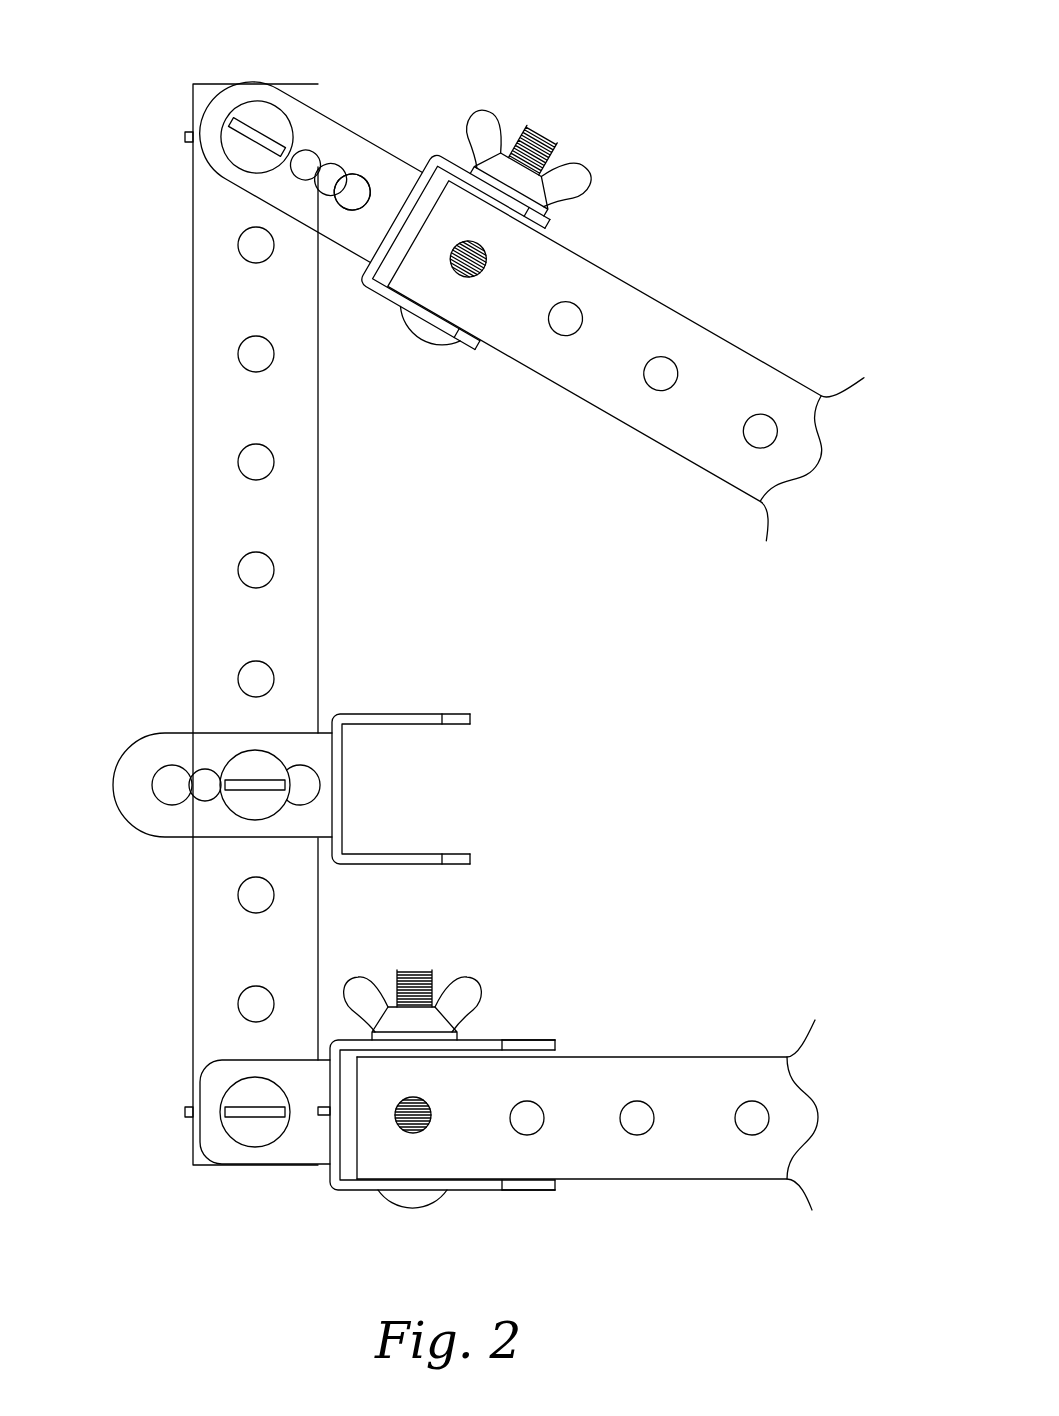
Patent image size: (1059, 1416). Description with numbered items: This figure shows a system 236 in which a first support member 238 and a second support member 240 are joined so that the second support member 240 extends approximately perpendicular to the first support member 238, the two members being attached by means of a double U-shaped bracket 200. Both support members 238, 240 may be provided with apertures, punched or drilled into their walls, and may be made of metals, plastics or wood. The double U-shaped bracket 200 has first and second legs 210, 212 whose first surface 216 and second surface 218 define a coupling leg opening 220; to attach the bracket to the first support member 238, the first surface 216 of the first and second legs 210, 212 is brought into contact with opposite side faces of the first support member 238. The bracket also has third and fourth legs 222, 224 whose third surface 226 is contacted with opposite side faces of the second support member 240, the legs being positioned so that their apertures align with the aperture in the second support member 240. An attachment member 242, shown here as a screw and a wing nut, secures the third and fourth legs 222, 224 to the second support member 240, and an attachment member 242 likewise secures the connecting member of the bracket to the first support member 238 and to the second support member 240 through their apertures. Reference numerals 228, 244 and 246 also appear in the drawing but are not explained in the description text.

The double U-shaped bracket 200 is at (447, 97).
The first leg 210 is at (336, 128).
The second leg 212 is at (556, 1190).
The first surface 216 is at (491, 1058).
The second surface 218 is at (378, 237).
The coupling leg opening 220 is at (290, 188).
The third leg 222 is at (477, 346).
The fourth leg 224 is at (552, 218).
The third surface 226 is at (389, 726).
The U-shaped bracket 228 is at (372, 718).
The system 236 is at (642, 40).
The first support member 238 is at (631, 281).
The second support member 240 is at (192, 408).
The attachment member 242 is at (553, 138).
The hinge plate 244 is at (160, 733).
The slot end 246 is at (357, 176).